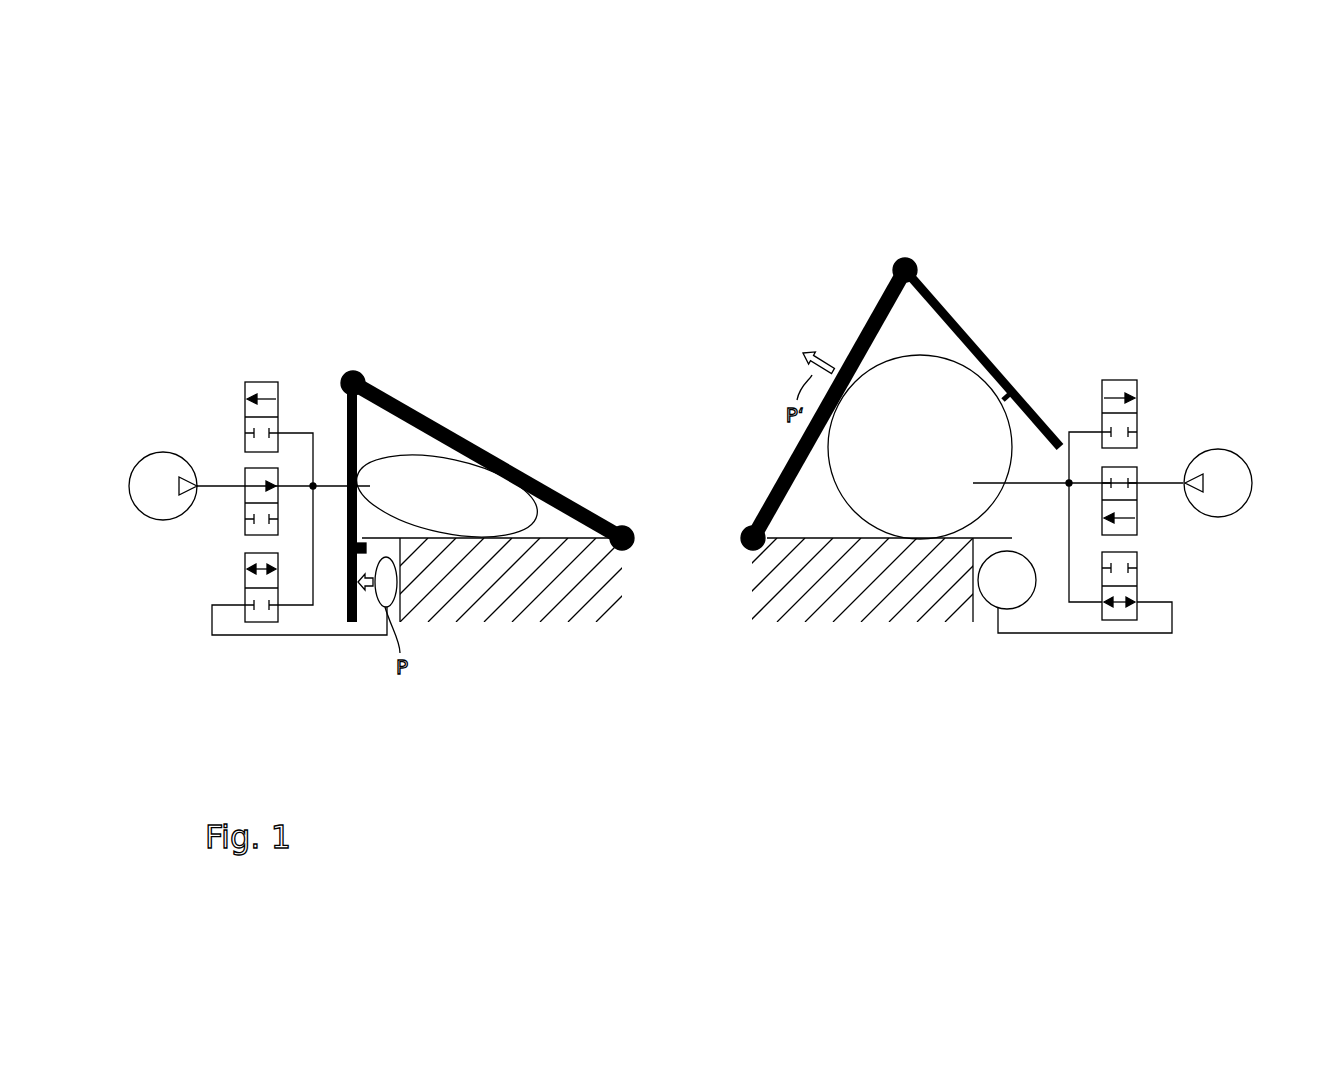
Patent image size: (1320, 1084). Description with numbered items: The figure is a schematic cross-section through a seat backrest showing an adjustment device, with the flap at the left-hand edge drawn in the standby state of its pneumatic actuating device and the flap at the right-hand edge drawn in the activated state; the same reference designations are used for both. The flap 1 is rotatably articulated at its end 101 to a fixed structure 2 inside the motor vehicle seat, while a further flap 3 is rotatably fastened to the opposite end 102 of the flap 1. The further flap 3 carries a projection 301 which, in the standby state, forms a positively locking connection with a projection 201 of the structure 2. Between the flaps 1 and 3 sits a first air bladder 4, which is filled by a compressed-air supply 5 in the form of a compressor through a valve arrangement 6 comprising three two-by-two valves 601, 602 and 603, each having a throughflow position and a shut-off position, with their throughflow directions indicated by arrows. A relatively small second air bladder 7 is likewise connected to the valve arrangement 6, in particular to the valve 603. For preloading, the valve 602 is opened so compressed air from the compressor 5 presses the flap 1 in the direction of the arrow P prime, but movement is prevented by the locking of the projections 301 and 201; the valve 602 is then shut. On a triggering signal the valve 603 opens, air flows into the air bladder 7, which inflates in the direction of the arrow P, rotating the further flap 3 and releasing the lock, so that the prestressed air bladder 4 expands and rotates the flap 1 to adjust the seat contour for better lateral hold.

The flap 1 is at (470, 440).
The fixed structure 2 is at (532, 622).
The further flap 3 is at (347, 405).
The first air bladder 4 is at (517, 517).
The compressed-air supply 5 is at (162, 452).
The valve arrangement 6 is at (671, 438).
The second air bladder 7 is at (365, 593).
The end of the flap 101 is at (632, 525).
The opposite end of the flap 102 is at (358, 372).
The projection of the structure 201 is at (380, 537).
The projection of the further flap 301 is at (367, 548).
The valve 601 is at (245, 418).
The valve 602 is at (243, 512).
The valve 603 is at (245, 565).